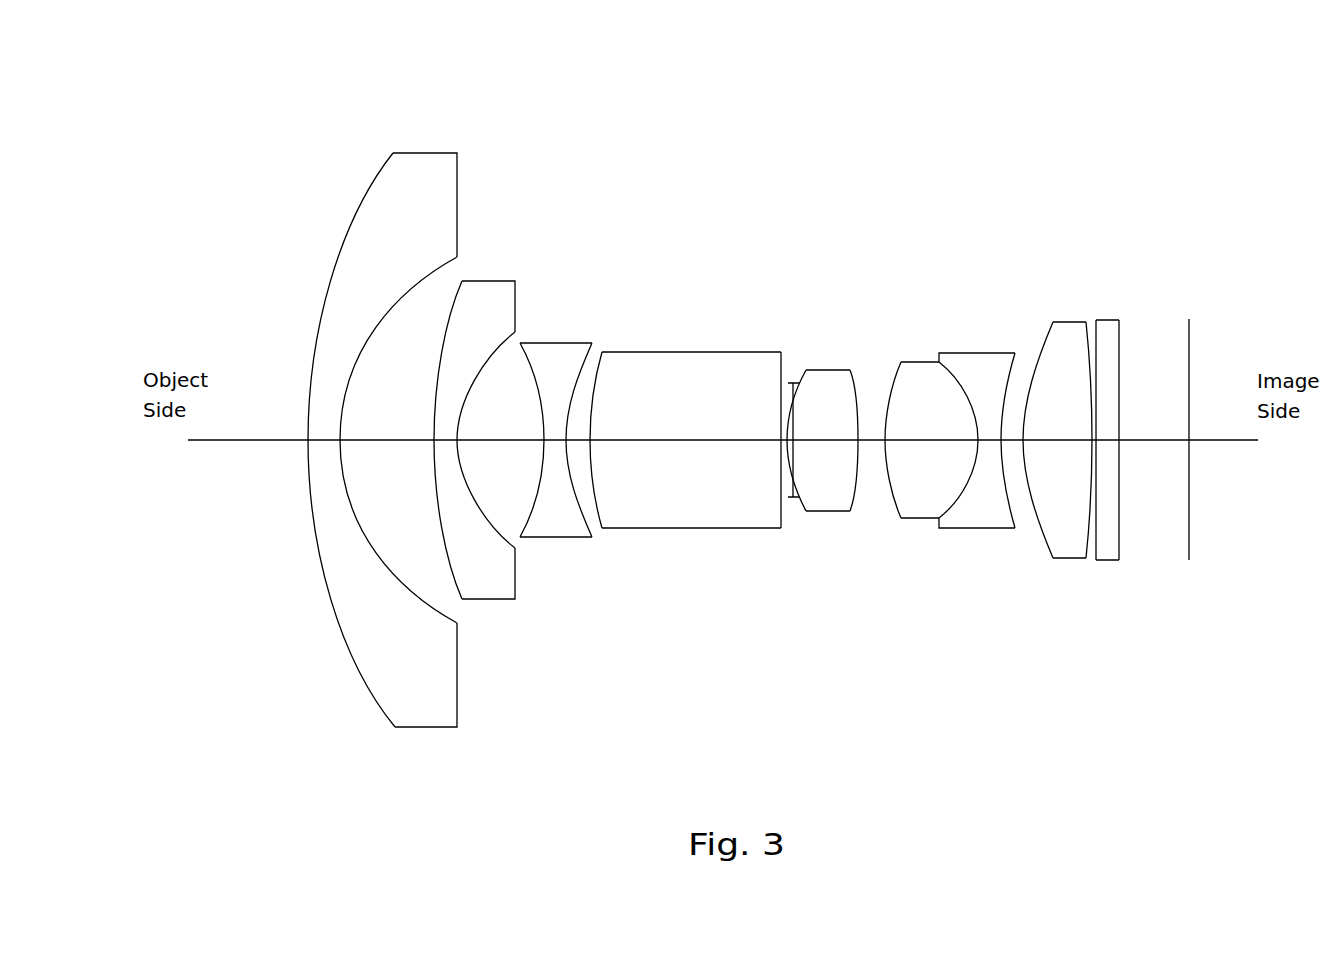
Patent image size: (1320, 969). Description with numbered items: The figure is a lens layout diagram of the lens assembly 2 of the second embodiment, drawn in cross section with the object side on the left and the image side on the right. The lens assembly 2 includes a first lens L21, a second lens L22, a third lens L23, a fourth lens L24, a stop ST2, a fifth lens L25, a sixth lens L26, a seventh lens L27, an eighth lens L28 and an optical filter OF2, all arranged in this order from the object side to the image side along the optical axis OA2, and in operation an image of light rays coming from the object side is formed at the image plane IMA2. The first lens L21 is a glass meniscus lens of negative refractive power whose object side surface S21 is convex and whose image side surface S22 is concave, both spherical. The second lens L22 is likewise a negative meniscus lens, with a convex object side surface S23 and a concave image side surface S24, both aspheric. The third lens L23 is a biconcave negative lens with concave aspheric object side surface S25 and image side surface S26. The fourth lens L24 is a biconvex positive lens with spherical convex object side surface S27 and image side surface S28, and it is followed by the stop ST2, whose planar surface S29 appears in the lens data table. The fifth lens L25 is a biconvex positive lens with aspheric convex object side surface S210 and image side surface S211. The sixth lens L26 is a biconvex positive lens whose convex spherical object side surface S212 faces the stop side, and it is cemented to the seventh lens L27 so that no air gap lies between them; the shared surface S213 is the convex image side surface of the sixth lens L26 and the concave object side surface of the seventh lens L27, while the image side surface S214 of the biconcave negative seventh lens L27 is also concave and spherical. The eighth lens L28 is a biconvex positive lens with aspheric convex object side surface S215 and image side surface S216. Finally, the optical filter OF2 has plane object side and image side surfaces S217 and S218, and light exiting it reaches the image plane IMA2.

The lens assembly 2 is at (149, 77).
The optical axis OA2 is at (275, 440).
The first lens L21 is at (430, 153).
The second lens L22 is at (507, 281).
The third lens L23 is at (575, 343).
The fourth lens L24 is at (685, 352).
The stop ST2 is at (793, 383).
The fifth lens L25 is at (836, 370).
The sixth lens L26 is at (915, 362).
The seventh lens L27 is at (990, 353).
The eighth lens L28 is at (1072, 322).
The optical filter OF2 is at (1113, 320).
The image plane IMA2 is at (1190, 319).
The object side surface of first lens S21 is at (345, 640).
The image side surface of first lens S22 is at (410, 597).
The object side surface of second lens S23 is at (452, 570).
The image side surface of second lens S24 is at (492, 540).
The object side surface of third lens S25 is at (525, 527).
The image side surface of third lens S26 is at (578, 505).
The object side surface of fourth lens S27 is at (590, 492).
The image side surface of fourth lens S28 is at (781, 490).
The stop surface S29 is at (797, 497).
The object side surface of fifth lens S210 is at (853, 490).
The image side surface of fifth lens S211 is at (892, 508).
The object side surface of sixth lens S212 is at (963, 500).
The cemented surface of sixth and seventh lenses S213 is at (1003, 518).
The image side surface of seventh lens S214 is at (1042, 537).
The object side surface of eighth lens S215 is at (1088, 510).
The image side surface of eighth lens S216 is at (1098, 556).
The object side surface of optical filter S217 is at (1096, 545).
The image side surface of optical filter S218 is at (1119, 533).